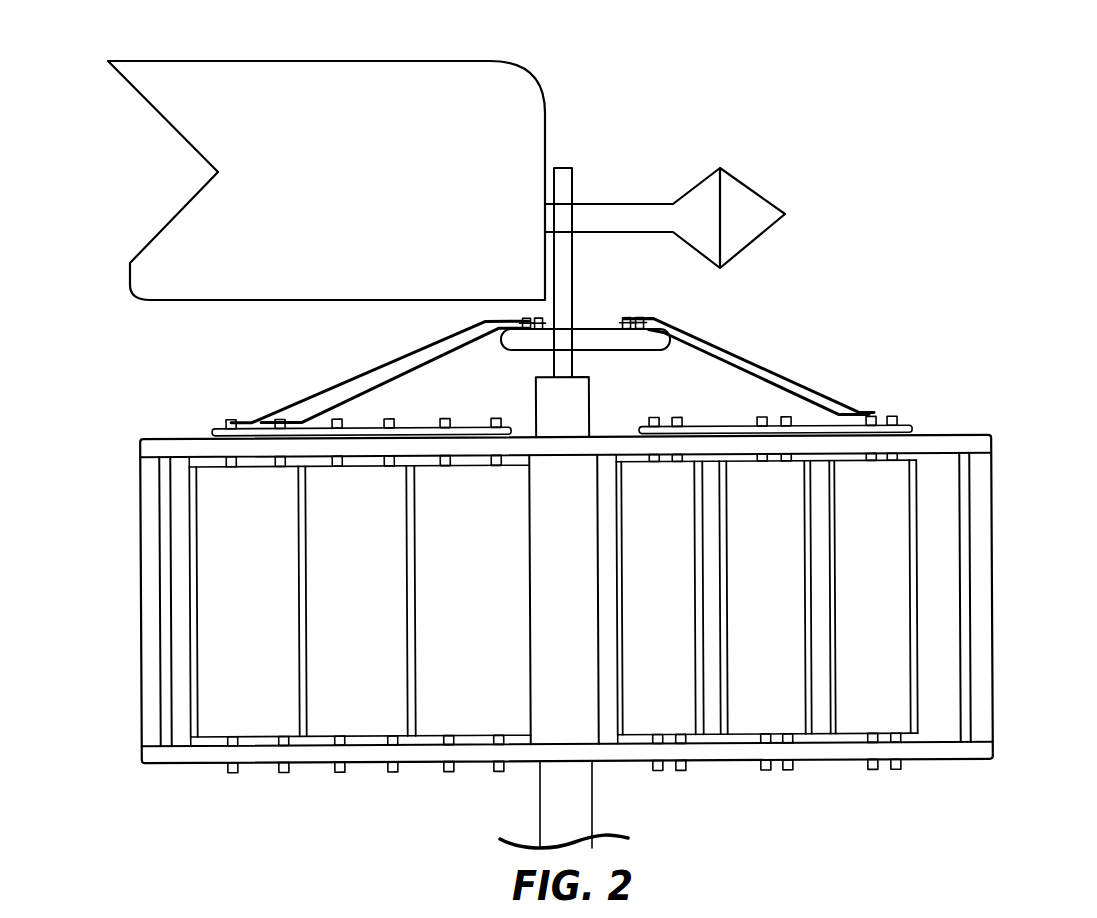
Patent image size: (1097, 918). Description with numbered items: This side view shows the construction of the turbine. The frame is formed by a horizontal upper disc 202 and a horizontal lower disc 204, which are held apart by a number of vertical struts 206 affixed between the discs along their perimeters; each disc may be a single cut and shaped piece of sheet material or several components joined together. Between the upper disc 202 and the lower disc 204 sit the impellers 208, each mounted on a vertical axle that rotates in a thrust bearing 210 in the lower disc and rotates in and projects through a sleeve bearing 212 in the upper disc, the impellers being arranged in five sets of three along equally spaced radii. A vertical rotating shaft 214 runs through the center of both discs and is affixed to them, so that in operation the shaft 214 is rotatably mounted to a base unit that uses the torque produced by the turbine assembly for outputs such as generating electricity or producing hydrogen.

The horizontal upper disc 202 is at (937, 442).
The horizontal lower disc 204 is at (955, 752).
The vertical struts 206 is at (147, 538).
The impellers 208 is at (678, 717).
The thrust bearing 210 is at (282, 773).
The sleeve bearing 212 is at (226, 416).
The vertical rotating shaft 214 is at (577, 788).